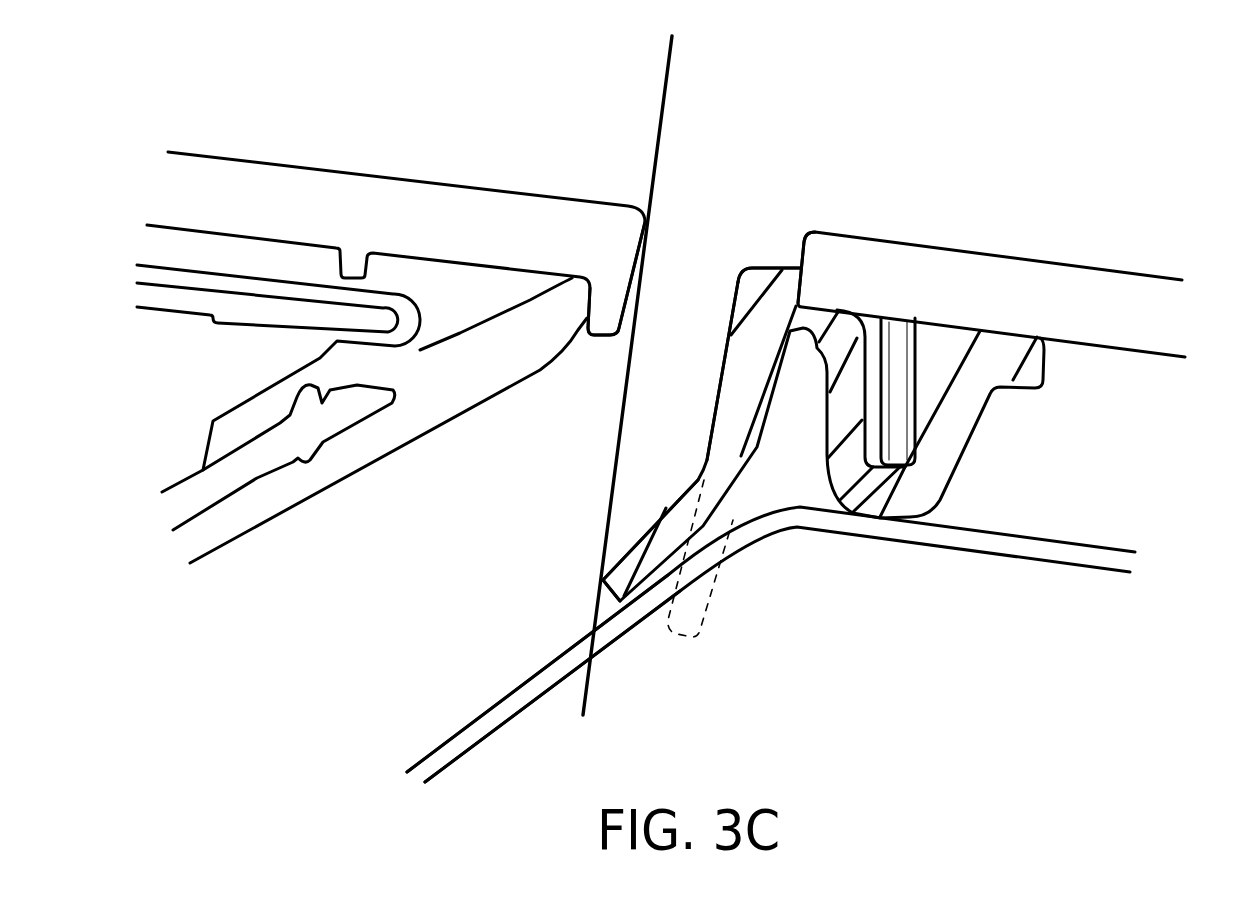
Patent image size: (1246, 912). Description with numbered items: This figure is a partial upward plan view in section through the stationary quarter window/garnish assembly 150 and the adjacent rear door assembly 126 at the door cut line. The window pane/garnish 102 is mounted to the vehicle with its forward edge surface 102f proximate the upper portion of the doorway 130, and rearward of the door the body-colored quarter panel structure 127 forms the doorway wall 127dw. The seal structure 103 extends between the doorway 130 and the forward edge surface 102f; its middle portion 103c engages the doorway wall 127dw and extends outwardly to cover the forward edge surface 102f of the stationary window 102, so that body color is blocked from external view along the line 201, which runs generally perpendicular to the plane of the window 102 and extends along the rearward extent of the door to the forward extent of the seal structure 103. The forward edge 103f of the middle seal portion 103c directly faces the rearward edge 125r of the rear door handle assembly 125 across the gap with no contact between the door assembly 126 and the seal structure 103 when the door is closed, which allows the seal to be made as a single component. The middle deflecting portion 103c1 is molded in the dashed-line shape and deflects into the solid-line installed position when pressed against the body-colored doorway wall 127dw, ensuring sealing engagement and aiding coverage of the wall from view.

The window pane/garnish 102 is at (1155, 313).
The forward edge surface 102f is at (805, 254).
The seal structure 103 is at (977, 441).
The forward edge of the seal 103f is at (736, 335).
The middle portion of the seal 103c is at (721, 395).
The middle deflecting portion 103c1 is at (640, 543).
The rear door handle assembly 125 is at (178, 188).
The rearward edge of the rear door handle assembly 125r is at (647, 241).
The rear door assembly 126 is at (305, 71).
The quarter panel structure 127 is at (1125, 563).
The body-colored doorway wall 127dw is at (573, 650).
The doorway 130 is at (420, 597).
The stationary quarter window/garnish assembly 150 is at (1160, 142).
The line 201 is at (668, 57).